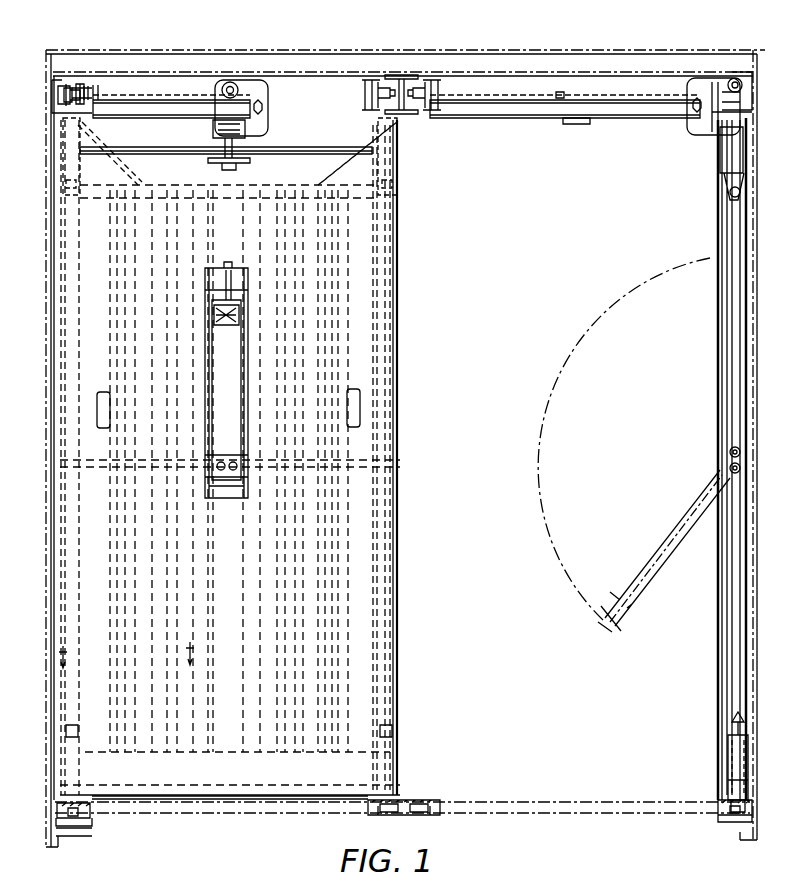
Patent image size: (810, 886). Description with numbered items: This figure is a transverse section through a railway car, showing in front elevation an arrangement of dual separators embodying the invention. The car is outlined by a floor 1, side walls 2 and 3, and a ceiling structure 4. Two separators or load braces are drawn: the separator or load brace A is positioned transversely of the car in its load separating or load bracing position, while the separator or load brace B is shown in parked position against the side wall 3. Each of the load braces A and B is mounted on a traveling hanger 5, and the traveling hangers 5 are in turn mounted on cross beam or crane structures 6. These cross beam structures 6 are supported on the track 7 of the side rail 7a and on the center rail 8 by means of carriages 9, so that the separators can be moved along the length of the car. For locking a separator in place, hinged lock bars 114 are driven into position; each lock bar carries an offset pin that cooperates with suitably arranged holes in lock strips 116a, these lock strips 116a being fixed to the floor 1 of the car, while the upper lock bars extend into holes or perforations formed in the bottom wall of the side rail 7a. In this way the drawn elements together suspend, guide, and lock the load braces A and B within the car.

The floor 1 is at (493, 813).
The wall 2 is at (50, 337).
The wall 3 is at (753, 290).
The ceiling structure 4 is at (447, 72).
The traveling hanger 5 is at (242, 83).
The cross beam or crane structure 6 is at (143, 110).
The track 7 is at (97, 118).
The side rail 7a is at (50, 80).
The center rail 8 is at (397, 110).
The carriage 9 is at (80, 87).
The hinged lock bar 114 is at (740, 763).
The lock strip 116a is at (88, 808).
The separator or load brace A is at (400, 383).
The separator or load brace B is at (718, 323).